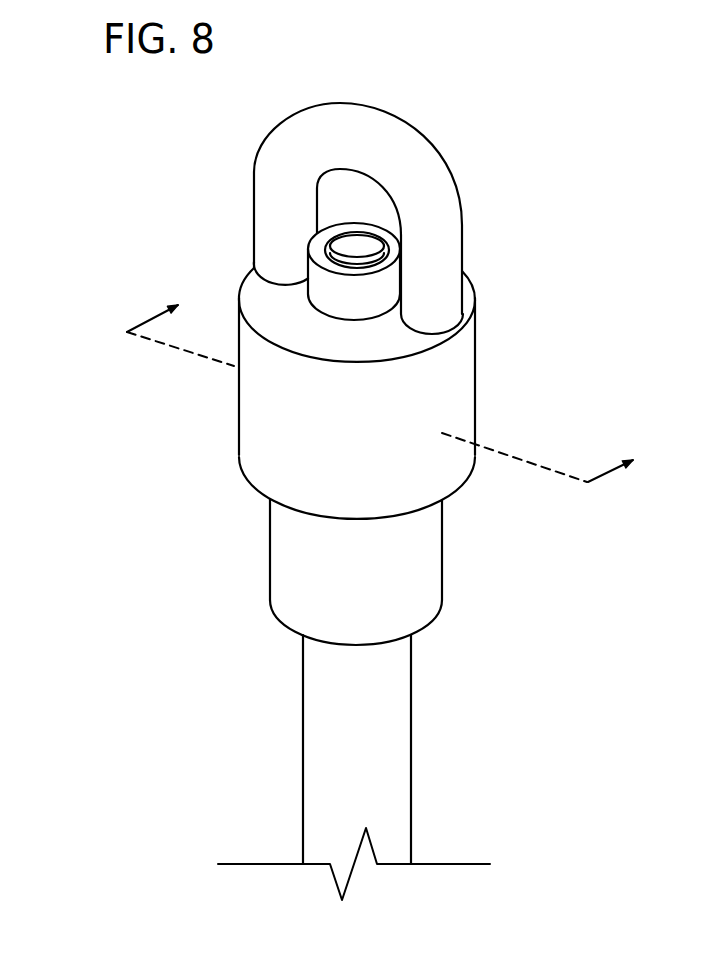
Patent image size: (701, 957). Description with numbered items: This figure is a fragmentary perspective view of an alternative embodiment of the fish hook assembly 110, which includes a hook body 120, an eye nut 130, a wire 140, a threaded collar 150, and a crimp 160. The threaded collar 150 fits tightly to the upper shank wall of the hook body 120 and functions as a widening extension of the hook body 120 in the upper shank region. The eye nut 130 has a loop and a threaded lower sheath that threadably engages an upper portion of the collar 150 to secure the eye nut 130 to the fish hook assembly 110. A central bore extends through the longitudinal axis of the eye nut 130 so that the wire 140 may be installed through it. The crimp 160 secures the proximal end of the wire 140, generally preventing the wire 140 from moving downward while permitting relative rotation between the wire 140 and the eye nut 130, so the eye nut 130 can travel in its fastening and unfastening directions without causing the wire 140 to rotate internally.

The fish hook assembly 110 is at (567, 233).
The hook body 120 is at (343, 735).
The eye nut 130 is at (440, 395).
The wire 140 is at (358, 250).
The threaded collar 150 is at (315, 563).
The crimp 160 is at (325, 288).